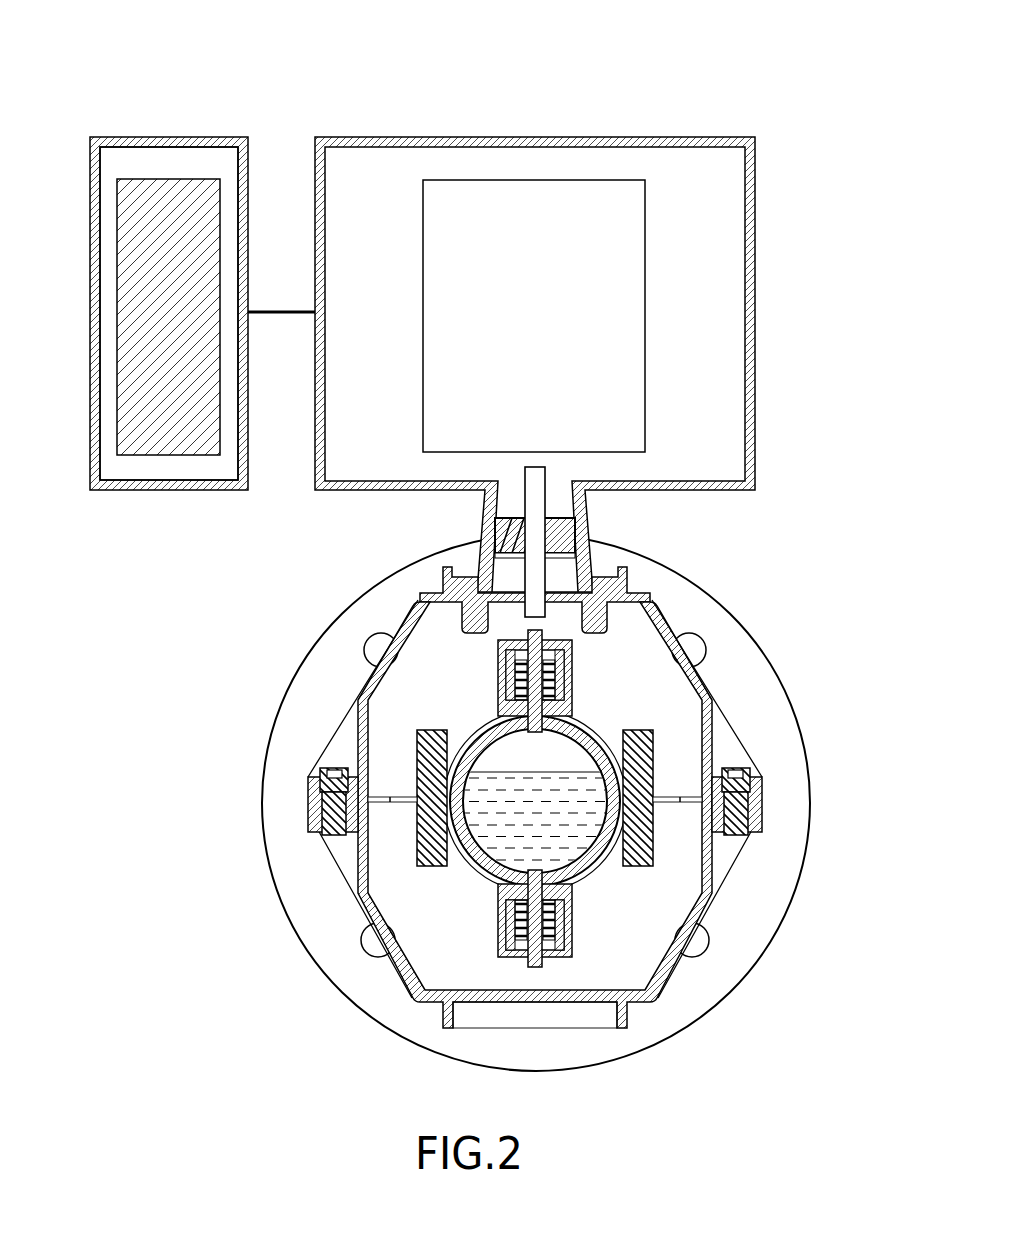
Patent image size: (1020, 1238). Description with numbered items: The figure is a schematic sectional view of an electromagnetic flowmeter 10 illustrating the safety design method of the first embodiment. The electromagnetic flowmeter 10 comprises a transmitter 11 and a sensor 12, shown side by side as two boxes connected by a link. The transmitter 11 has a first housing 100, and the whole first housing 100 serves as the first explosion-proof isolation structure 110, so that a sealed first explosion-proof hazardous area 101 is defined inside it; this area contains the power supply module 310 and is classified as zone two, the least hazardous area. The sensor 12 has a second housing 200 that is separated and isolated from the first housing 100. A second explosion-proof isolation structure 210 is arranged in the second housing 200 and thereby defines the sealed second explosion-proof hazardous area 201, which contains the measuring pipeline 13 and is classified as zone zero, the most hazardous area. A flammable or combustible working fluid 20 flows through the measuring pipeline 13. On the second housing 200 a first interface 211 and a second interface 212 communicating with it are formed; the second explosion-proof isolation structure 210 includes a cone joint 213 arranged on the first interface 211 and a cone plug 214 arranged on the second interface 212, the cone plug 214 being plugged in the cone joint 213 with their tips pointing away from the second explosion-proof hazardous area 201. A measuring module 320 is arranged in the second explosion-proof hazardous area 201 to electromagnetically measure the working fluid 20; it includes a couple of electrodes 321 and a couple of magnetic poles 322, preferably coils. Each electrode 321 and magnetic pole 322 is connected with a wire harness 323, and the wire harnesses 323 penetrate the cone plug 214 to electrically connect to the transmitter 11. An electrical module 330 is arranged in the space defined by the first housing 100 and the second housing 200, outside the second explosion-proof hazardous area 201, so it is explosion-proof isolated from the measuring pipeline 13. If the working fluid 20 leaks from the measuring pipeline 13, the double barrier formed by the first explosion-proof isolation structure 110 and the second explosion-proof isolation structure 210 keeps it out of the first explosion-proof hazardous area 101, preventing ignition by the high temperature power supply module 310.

The electromagnetic flowmeter 10 is at (752, 71).
The transmitter 11 is at (91, 133).
The sensor 12 is at (650, 110).
The measuring pipeline 13 is at (597, 737).
The working fluid 20 is at (560, 822).
The first housing 100 is at (118, 133).
The first explosion-proof hazardous area 101 is at (216, 165).
The first explosion-proof isolation structure 110 is at (175, 142).
The second housing 200 is at (528, 135).
The second explosion-proof hazardous area 201 is at (660, 688).
The second explosion-proof isolation structure 210 is at (327, 497).
The first interface 211 is at (484, 504).
The second interface 212 is at (515, 598).
The cone joint 213 is at (497, 518).
The cone plug 214 is at (491, 537).
The power supply module 310 is at (187, 331).
The measuring module 320 is at (172, 763).
The electrodes 321 is at (415, 843).
The magnetic poles 322 is at (494, 673).
The wire harness 323 is at (542, 502).
The electrical module 330 is at (540, 328).